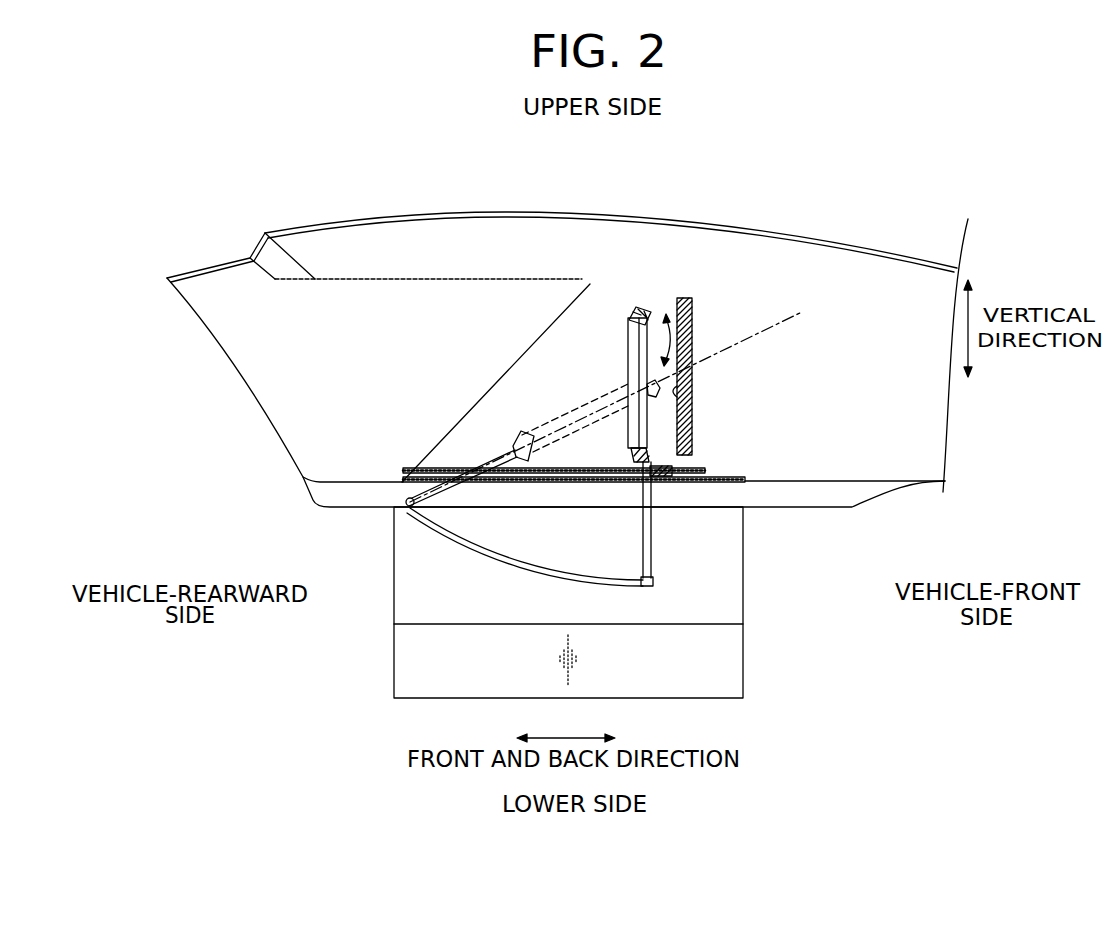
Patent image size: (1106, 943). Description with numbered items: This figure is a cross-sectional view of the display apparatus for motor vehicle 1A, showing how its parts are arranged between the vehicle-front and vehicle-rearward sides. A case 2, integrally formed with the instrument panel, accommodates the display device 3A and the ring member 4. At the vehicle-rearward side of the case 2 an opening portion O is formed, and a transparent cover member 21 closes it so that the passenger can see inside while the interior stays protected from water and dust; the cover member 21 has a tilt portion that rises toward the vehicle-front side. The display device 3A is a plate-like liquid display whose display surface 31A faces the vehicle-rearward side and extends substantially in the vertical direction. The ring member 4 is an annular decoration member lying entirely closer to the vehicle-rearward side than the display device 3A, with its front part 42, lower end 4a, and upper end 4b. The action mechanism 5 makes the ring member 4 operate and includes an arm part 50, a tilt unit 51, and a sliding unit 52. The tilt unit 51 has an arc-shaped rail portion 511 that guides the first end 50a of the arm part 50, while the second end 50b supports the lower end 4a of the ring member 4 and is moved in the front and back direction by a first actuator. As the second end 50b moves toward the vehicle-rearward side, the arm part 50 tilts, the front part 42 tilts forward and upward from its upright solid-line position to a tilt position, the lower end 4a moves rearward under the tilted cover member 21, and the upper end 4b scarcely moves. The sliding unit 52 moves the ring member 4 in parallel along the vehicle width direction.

The display apparatus for motor vehicle 1A is at (684, 186).
The case 2 is at (505, 211).
The cover member 21 is at (318, 237).
The opening portion O is at (236, 397).
The display device 3A is at (724, 376).
The display surface 31A is at (693, 397).
The ring member 4 is at (604, 377).
The lower end 4a is at (650, 455).
The upper end 4b is at (647, 317).
The front part 42 is at (625, 373).
The action mechanism 5 is at (622, 570).
The arm part 50 is at (663, 524).
The first end 50a is at (654, 581).
The second end 50b is at (656, 466).
The tilt unit 51 is at (608, 559).
The rail portion 511 is at (488, 553).
The sliding unit 52 is at (727, 672).